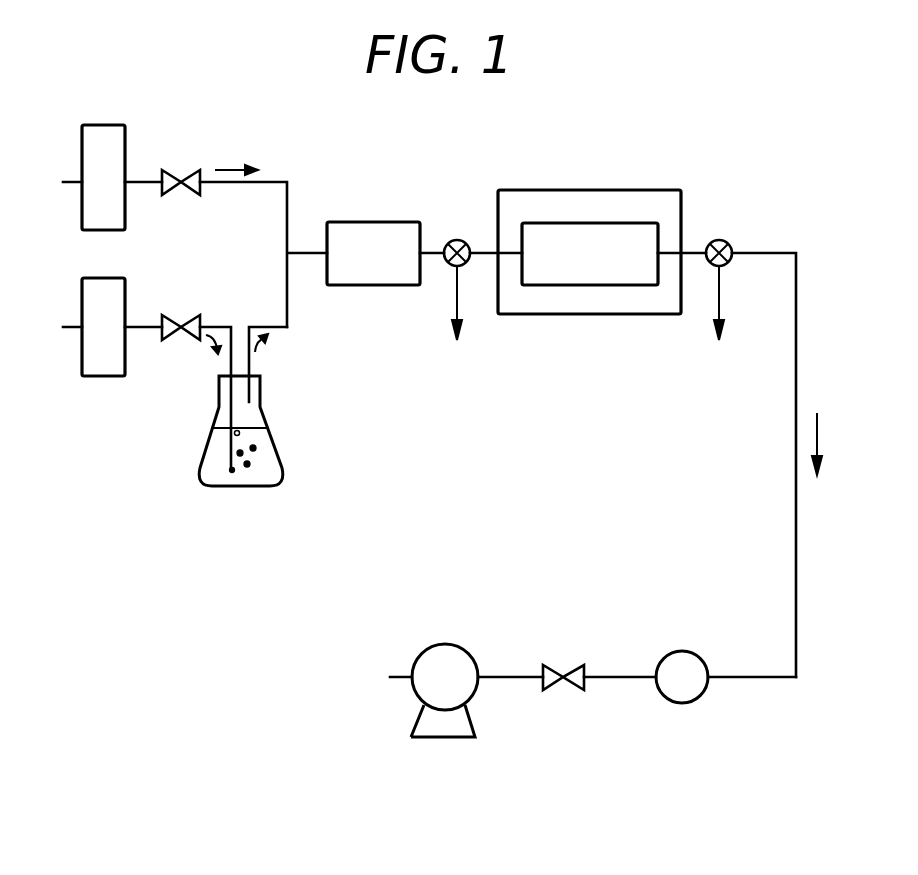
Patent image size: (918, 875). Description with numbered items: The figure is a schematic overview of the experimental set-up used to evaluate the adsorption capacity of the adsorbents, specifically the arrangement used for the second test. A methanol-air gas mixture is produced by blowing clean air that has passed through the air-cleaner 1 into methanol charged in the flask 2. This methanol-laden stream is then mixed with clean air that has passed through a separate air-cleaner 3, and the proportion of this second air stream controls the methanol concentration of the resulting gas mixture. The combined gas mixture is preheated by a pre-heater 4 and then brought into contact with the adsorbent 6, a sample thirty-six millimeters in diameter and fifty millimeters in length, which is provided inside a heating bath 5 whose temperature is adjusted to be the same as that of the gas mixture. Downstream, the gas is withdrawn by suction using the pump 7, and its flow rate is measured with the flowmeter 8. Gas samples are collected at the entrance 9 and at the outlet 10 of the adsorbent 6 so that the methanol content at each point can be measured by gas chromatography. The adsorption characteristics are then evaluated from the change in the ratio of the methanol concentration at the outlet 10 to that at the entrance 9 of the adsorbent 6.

The air-cleaner 1 is at (120, 377).
The flask 2 is at (280, 452).
The separate air-cleaner 3 is at (118, 125).
The pre-heater 4 is at (342, 222).
The heating bath 5 is at (528, 190).
The adsorbent 6 is at (633, 223).
The pump 7 is at (458, 647).
The flowmeter 8 is at (692, 652).
The entrance 9 is at (466, 262).
The outlet 10 is at (728, 262).